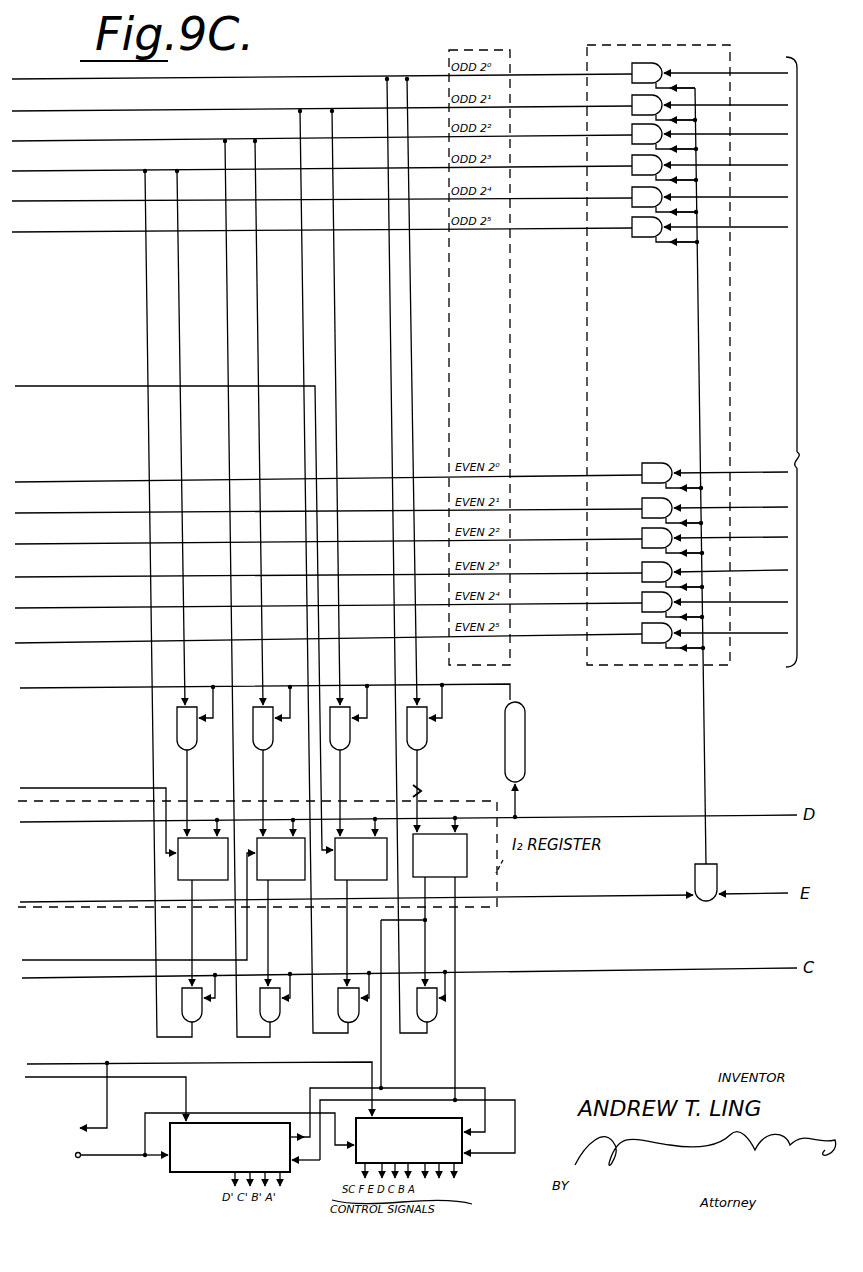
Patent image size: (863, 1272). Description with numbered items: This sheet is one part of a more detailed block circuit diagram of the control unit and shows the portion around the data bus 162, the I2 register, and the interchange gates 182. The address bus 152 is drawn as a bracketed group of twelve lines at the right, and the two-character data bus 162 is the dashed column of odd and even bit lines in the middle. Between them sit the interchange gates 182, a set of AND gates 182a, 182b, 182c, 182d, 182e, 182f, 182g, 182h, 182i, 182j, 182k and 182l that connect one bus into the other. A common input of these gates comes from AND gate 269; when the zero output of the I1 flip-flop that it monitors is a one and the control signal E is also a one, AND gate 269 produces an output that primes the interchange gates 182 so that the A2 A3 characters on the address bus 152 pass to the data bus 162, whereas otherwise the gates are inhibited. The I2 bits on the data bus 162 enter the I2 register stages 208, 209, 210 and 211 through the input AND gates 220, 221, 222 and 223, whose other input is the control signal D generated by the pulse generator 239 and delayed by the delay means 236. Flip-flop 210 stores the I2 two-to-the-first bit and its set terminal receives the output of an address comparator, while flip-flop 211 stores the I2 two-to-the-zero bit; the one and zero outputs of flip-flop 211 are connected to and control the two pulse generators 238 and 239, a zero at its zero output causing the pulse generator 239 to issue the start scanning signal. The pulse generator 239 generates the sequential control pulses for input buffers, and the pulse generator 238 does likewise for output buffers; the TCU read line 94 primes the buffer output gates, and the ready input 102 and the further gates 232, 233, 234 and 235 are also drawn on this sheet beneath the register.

The TCU read line 94 is at (87, 1110).
The ready line 102 is at (90, 1158).
The address bus 152 is at (808, 362).
The data bus 162 is at (505, 49).
The interchange gates 182 is at (726, 47).
The interchange gate 182a is at (632, 70).
The interchange gate 182b is at (632, 102).
The interchange gate 182c is at (632, 131).
The interchange gate 182d is at (632, 162).
The interchange gate 182e is at (632, 194).
The interchange gate 182f is at (632, 224).
The interchange gate 182g is at (642, 470).
The interchange gate 182h is at (642, 505).
The interchange gate 182i is at (642, 535).
The interchange gate 182j is at (642, 569).
The interchange gate 182k is at (642, 599).
The interchange gate 182l is at (642, 630).
The I2 register stage 208 is at (229, 888).
The I2 register stage 209 is at (306, 888).
The I2 register stage flip-flop 210 is at (388, 888).
The I2 register stage flip-flop 211 is at (467, 876).
The input AND gate 220 is at (190, 749).
The input AND gate 221 is at (266, 749).
The input AND gate 222 is at (343, 749).
The input AND gate 223 is at (420, 749).
The AND gate 232 is at (197, 1020).
The AND gate 233 is at (278, 1018).
The AND gate 234 is at (353, 1018).
The AND gate 235 is at (434, 1018).
The delay means 236 is at (527, 748).
The pulse generator 238 is at (175, 1172).
The pulse generator 239 is at (462, 1163).
The AND gate 269 is at (706, 901).